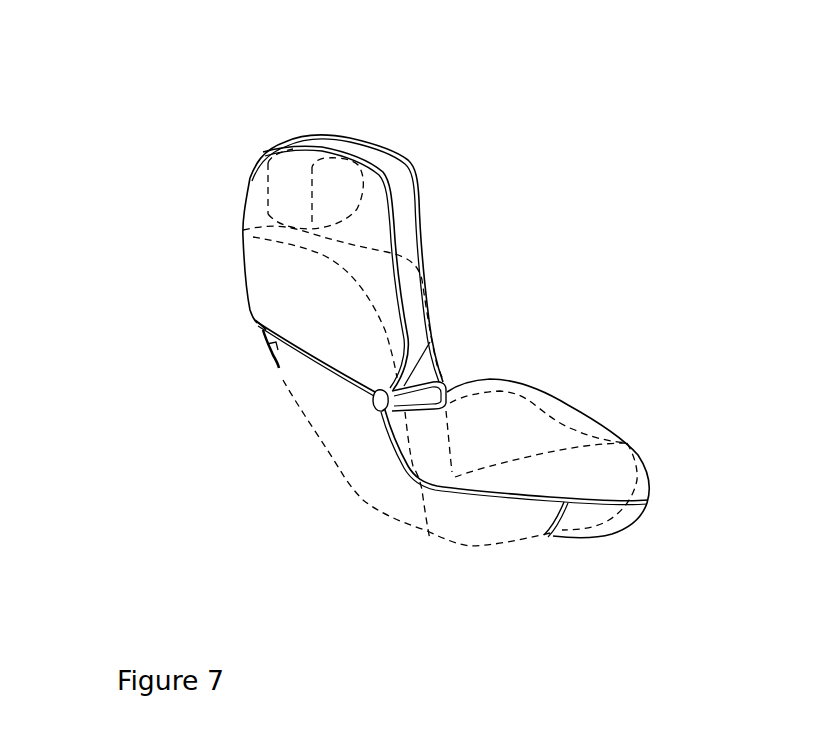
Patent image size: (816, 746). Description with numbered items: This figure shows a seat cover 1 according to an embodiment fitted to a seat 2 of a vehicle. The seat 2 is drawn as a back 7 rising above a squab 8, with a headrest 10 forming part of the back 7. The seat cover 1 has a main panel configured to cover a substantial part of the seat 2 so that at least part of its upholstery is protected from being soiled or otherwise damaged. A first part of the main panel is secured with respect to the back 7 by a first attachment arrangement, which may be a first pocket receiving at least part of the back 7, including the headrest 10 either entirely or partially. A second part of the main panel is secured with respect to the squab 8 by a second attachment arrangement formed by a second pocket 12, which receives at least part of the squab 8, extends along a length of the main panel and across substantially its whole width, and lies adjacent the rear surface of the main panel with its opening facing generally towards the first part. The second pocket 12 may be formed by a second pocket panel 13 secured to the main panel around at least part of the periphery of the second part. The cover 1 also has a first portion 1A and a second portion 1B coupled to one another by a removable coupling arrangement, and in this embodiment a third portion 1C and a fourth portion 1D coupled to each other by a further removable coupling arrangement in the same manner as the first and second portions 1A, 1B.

The seat cover 1 is at (170, 250).
The first portion 1A is at (382, 410).
The second portion 1B is at (403, 387).
The third portion 1C is at (273, 360).
The fourth portion 1D is at (260, 326).
The seat 2 is at (351, 459).
The back 7 is at (328, 393).
The squab 8 is at (499, 517).
The headrest 10 is at (290, 188).
The second pocket 12 is at (576, 527).
The second pocket panel 13 is at (623, 523).